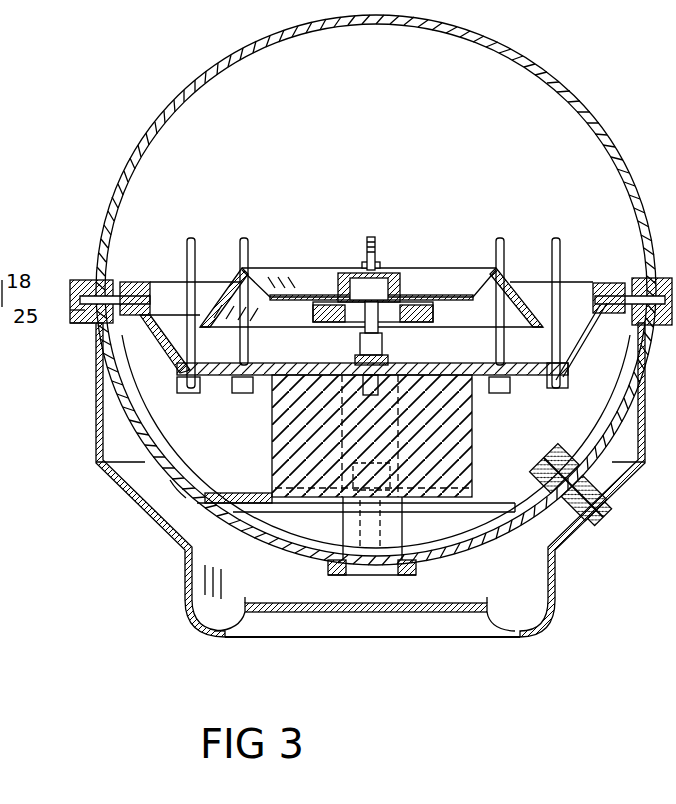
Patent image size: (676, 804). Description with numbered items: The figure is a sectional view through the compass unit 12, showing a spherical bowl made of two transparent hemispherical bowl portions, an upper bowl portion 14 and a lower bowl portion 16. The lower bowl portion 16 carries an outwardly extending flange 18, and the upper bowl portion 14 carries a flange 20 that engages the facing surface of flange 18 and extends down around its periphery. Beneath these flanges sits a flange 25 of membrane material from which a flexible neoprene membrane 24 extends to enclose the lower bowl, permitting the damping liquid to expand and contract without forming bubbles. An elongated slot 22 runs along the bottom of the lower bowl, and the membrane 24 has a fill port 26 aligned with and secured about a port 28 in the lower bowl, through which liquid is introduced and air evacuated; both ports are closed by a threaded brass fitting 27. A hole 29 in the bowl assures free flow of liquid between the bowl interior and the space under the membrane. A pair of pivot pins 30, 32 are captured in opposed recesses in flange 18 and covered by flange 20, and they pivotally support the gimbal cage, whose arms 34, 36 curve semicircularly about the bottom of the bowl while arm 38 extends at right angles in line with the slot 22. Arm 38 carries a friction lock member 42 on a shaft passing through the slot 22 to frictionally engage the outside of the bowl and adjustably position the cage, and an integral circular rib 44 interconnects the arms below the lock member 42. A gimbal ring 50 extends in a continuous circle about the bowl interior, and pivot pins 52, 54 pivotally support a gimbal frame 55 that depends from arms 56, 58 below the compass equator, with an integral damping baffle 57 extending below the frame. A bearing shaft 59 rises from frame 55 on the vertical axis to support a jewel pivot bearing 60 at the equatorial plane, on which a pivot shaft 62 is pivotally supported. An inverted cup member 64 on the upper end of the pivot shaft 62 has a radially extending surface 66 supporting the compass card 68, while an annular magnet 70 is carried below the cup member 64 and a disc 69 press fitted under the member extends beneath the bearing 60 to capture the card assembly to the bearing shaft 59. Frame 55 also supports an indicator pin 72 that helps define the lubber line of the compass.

The compass unit 12 is at (188, 78).
The upper bowl portion 14 is at (130, 153).
The lower bowl portion 16 is at (125, 428).
The flange 18 is at (75, 310).
The flange 20 is at (83, 280).
The elongated slot 22 is at (375, 570).
The flexible membrane 24 is at (155, 525).
The membrane flange 25 is at (72, 322).
The fill port 26 is at (582, 523).
The threaded brass fitting 27 is at (600, 505).
The port 28 is at (560, 478).
The hole 29 is at (175, 495).
The pivot pin 30 is at (97, 284).
The pivot pin 32 is at (635, 282).
The gimbal cage arm 34 is at (165, 450).
The gimbal cage arm 36 is at (597, 420).
The gimbal cage arm 38 is at (343, 525).
The friction lock member 42 is at (455, 455).
The circular rib 44 is at (245, 490).
The gimbal ring 50 is at (175, 282).
The pivot pin 52 is at (150, 300).
The pivot pin 54 is at (597, 300).
The gimbal frame 55 is at (255, 368).
The arm 56 is at (160, 348).
The damping baffle 57 is at (272, 422).
The arm 58 is at (580, 345).
The bearing shaft 59 is at (378, 318).
The jewel pivot bearing 60 is at (380, 275).
The pivot shaft 62 is at (360, 272).
The inverted cup member 64 is at (438, 312).
The radially extending surface 66 is at (405, 297).
The compass card 68 is at (440, 268).
The disc 69 is at (345, 322).
The annular magnet 70 is at (310, 318).
The indicator pin 72 is at (371, 238).